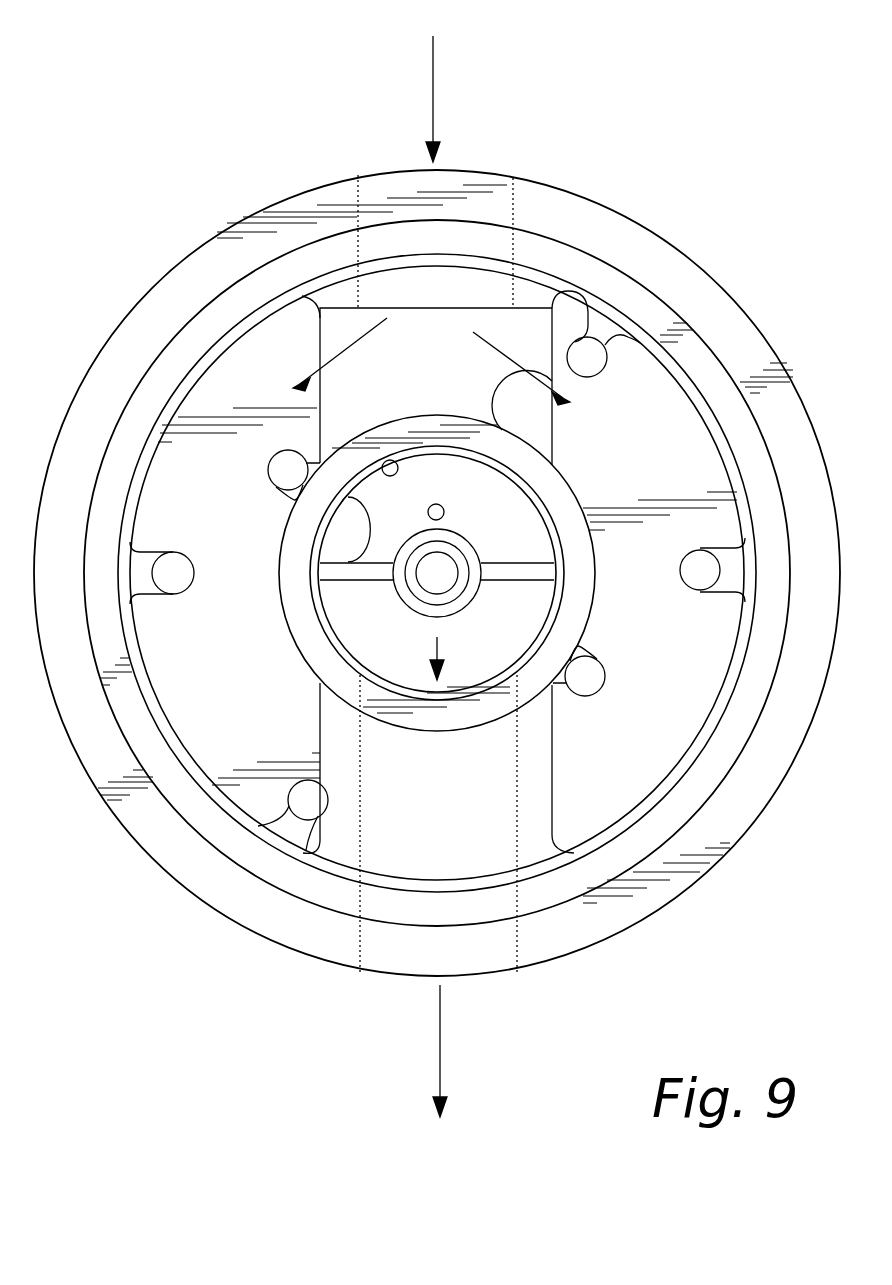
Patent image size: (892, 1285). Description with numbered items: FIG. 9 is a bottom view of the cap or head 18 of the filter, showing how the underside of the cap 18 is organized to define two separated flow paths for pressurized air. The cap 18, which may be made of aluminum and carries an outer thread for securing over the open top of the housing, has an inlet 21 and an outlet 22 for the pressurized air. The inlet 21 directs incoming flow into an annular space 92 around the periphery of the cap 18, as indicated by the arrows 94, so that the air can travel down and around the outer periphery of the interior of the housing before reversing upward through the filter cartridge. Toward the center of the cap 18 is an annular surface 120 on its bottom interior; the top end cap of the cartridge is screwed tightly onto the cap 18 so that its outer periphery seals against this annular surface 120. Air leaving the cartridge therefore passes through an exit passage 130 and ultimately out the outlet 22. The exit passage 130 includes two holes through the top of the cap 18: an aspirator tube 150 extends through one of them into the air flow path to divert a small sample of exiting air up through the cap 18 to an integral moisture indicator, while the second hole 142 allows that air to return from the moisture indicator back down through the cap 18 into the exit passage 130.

The cap 18 is at (693, 258).
The inlet 21 is at (433, 86).
The outlet 22 is at (442, 1072).
The annular space 92 is at (215, 523).
The arrows 94 is at (362, 346).
The annular surface 120 is at (562, 482).
The exit passage 130 is at (475, 490).
The second hole 142 is at (392, 477).
The aspirator tube 150 is at (445, 513).